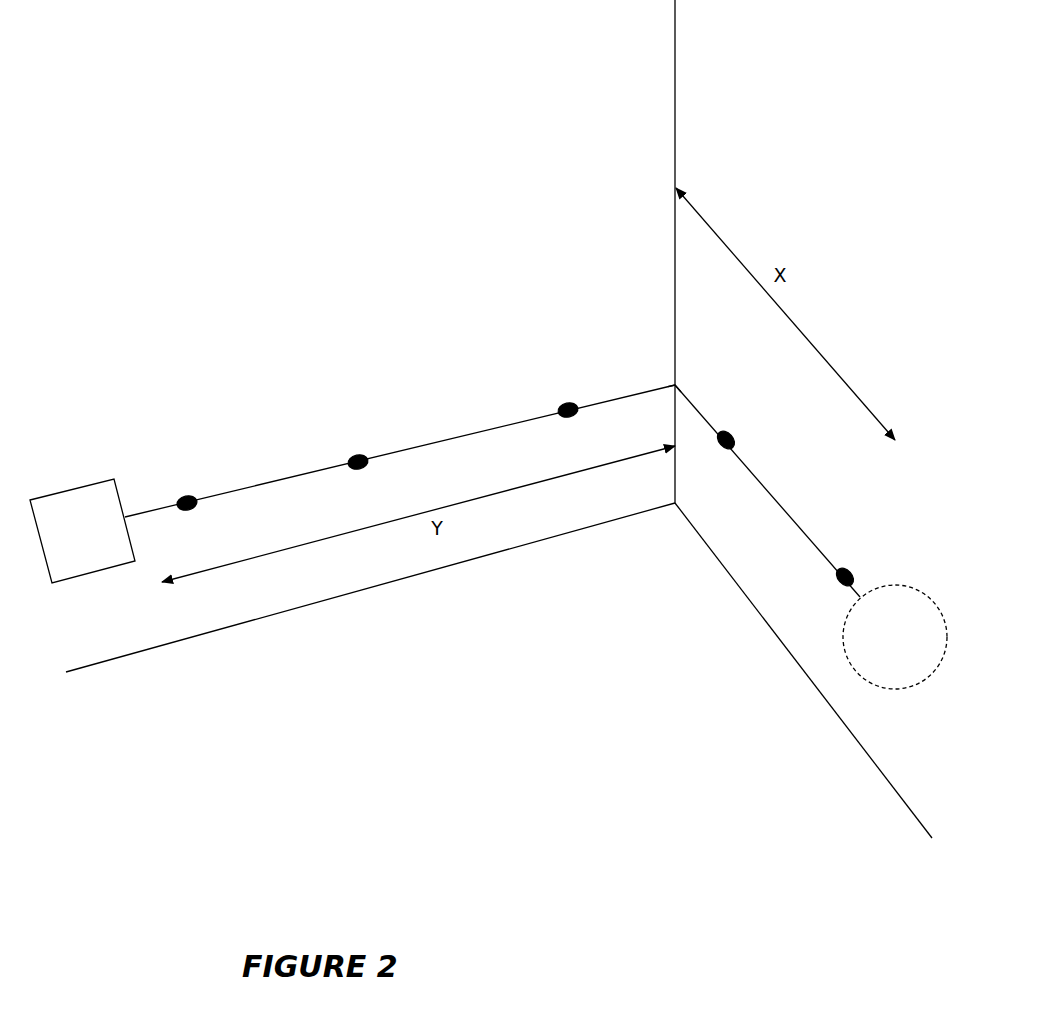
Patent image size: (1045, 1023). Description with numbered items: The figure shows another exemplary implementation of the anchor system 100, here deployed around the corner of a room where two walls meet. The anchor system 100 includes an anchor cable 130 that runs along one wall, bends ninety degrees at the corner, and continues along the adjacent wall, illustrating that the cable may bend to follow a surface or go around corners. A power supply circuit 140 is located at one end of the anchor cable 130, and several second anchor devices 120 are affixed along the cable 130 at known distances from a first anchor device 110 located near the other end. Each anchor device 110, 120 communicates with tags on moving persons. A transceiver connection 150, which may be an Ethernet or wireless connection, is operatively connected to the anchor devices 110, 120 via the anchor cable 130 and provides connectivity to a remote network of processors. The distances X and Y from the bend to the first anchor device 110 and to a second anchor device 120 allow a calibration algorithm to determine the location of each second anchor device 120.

The anchor system 100 is at (316, 392).
The first anchor device 110 is at (853, 568).
The second anchor device 120 is at (194, 496).
The anchor cable 130 is at (687, 392).
The power supply circuit 140 is at (82, 531).
The transceiver connection 150 is at (895, 637).